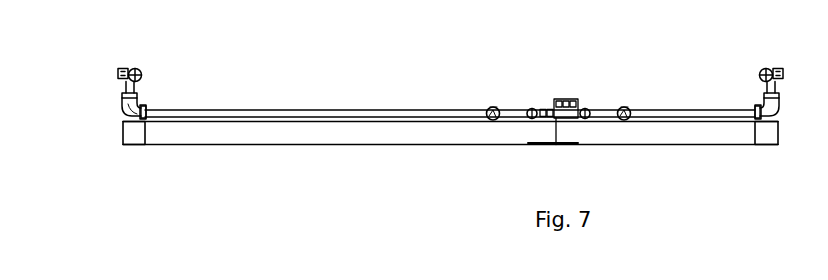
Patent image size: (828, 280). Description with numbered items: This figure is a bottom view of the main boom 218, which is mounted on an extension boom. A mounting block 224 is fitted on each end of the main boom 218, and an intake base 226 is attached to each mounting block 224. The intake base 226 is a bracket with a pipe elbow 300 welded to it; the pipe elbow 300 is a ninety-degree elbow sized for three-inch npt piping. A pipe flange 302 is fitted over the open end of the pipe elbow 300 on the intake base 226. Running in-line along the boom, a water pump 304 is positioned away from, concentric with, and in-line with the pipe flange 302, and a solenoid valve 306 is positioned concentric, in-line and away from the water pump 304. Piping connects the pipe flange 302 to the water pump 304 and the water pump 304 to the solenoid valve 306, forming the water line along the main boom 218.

The main boom 218 is at (330, 137).
The mounting block 224 is at (128, 134).
The intake base 226 is at (130, 113).
The pipe elbow 300 is at (128, 98).
The pipe flange 302 is at (145, 108).
The water pump 304 is at (488, 108).
The solenoid valve 306 is at (533, 108).